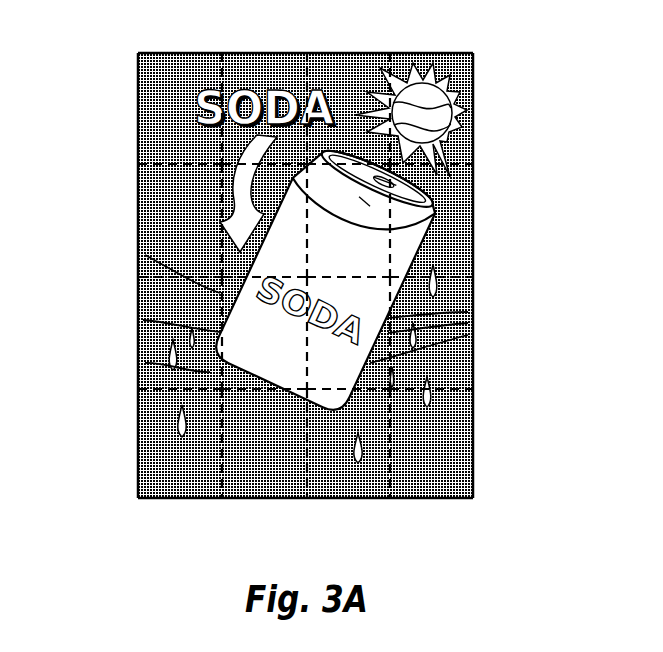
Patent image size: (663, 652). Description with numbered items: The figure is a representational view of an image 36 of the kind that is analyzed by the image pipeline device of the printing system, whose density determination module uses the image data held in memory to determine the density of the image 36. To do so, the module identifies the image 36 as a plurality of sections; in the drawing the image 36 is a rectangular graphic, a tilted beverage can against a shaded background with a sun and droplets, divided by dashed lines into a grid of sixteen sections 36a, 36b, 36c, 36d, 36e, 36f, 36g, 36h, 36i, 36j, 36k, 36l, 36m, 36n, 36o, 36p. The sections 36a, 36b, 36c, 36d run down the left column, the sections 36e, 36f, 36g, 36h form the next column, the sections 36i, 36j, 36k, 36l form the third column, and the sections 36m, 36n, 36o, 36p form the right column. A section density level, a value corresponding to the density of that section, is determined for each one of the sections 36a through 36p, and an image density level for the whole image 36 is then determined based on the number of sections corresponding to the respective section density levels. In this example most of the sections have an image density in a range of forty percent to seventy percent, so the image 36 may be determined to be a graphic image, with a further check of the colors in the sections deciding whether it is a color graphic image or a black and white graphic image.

The image 36 is at (320, 20).
The section 36a is at (147, 76).
The section 36b is at (165, 197).
The section 36c is at (163, 296).
The section 36d is at (163, 406).
The section 36e is at (232, 141).
The section 36f is at (226, 247).
The section 36g is at (214, 360).
The section 36h is at (231, 475).
The section 36i is at (363, 82).
The section 36j is at (440, 195).
The section 36k is at (365, 312).
The section 36l is at (363, 417).
The section 36m is at (460, 123).
The section 36n is at (460, 230).
The section 36o is at (457, 358).
The section 36p is at (447, 452).